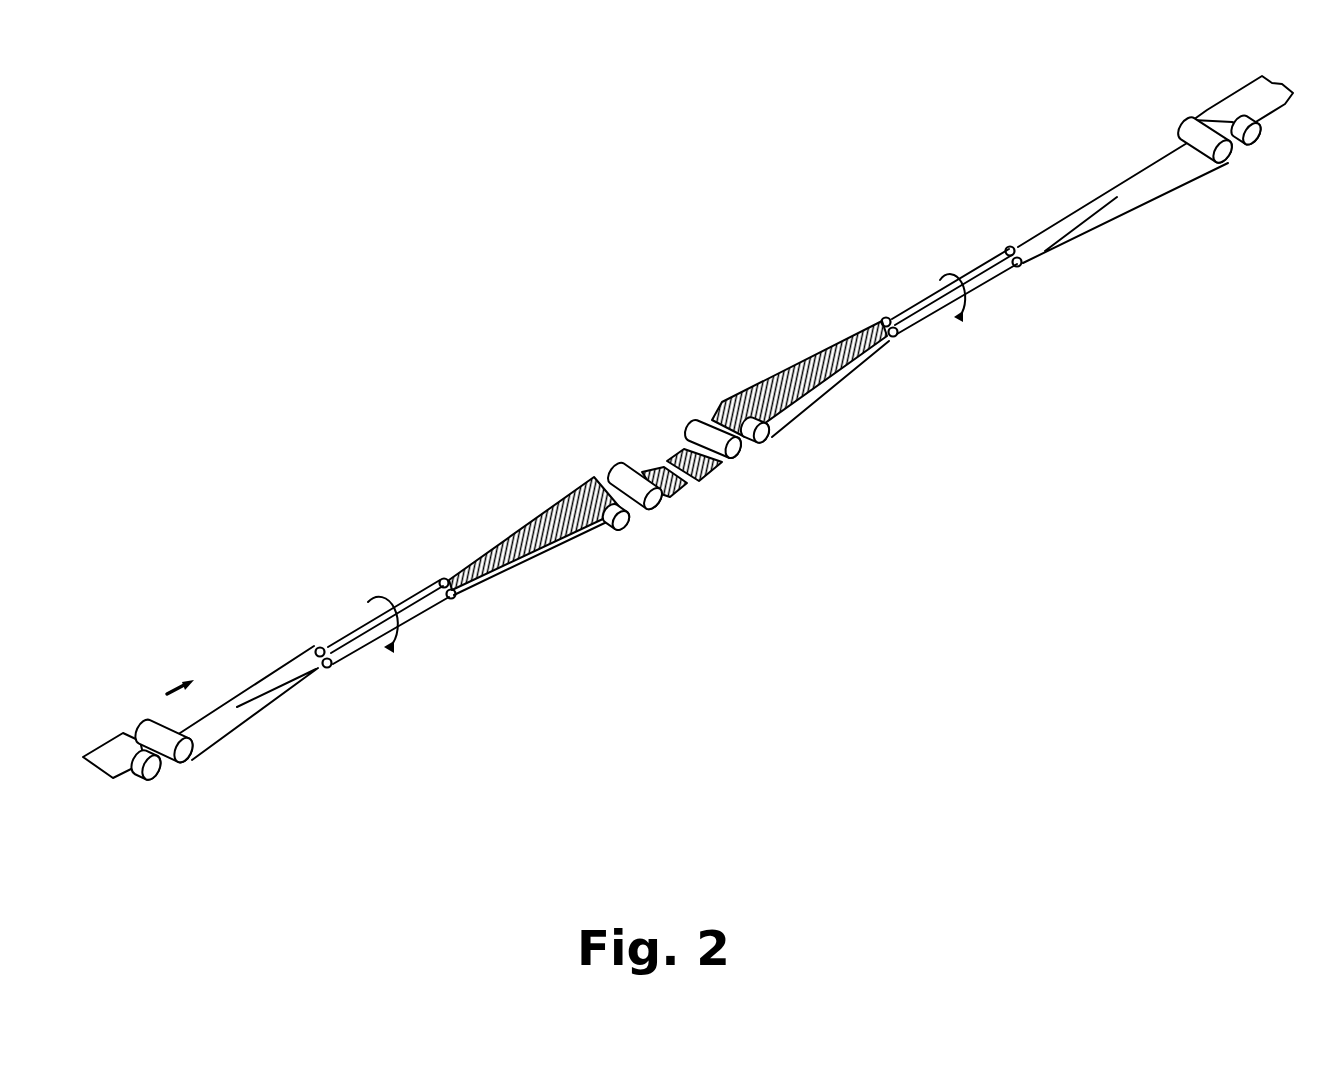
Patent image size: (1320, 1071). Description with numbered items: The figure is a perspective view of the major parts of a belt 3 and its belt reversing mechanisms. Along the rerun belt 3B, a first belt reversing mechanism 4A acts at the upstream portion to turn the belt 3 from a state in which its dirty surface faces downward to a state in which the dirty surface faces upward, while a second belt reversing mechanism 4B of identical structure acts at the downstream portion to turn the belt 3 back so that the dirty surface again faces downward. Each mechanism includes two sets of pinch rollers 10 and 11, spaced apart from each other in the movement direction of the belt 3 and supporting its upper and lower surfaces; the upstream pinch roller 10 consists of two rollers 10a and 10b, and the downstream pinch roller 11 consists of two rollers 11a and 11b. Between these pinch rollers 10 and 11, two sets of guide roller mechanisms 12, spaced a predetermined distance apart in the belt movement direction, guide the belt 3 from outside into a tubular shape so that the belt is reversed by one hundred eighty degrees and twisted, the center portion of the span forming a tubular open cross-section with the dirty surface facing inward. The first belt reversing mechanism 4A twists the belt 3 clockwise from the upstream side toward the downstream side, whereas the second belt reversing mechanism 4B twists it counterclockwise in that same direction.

The belt 3 is at (702, 477).
The rerun belt 3B is at (286, 680).
The first belt reversing mechanism 4A is at (420, 658).
The second belt reversing mechanism 4B is at (983, 355).
The upstream pinch roller 10 is at (478, 663).
The roller 10a is at (153, 780).
The roller 10b is at (189, 763).
The downstream pinch roller 11 is at (953, 380).
The roller 11a is at (623, 530).
The roller 11b is at (656, 505).
The guide roller mechanism 12 is at (317, 640).